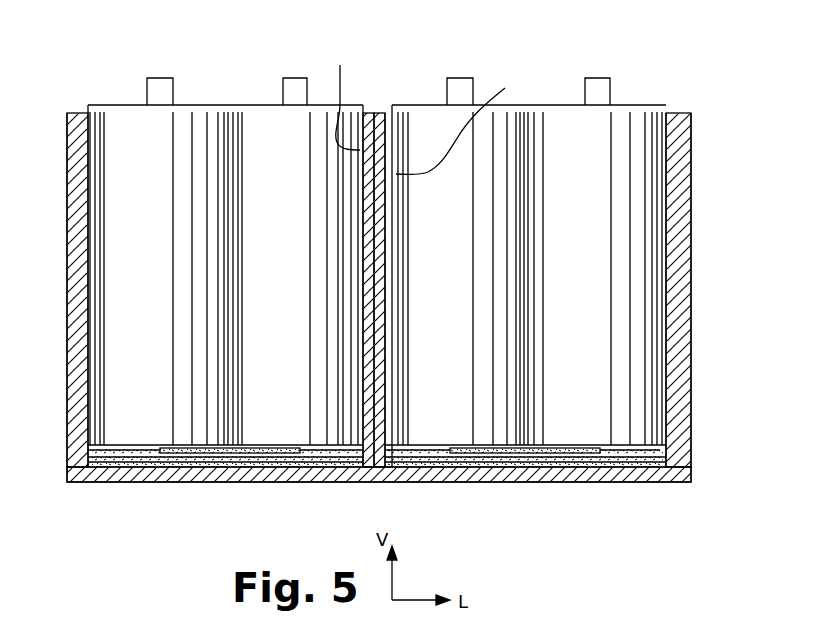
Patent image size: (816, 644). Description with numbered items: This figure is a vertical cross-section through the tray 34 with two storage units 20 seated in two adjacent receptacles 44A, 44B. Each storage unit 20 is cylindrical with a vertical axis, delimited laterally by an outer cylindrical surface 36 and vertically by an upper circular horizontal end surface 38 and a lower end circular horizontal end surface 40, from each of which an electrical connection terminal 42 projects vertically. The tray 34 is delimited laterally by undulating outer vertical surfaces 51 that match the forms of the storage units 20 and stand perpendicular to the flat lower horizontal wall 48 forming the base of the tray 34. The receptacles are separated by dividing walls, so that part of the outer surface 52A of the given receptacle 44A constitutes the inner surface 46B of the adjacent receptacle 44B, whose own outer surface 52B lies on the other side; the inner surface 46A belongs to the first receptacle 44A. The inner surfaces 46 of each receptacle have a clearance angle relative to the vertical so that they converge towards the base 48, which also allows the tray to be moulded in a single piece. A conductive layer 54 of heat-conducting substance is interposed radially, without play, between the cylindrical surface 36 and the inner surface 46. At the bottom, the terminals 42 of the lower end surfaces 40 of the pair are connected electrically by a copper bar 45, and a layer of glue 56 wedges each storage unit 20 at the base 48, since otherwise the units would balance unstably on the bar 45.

The tray 34 is at (708, 398).
The undulating outer vertical surface 51 is at (67, 315).
The inner surface 46 is at (88, 110).
The outer cylindrical surface 36 is at (690, 240).
The conductive layer 54 is at (666, 113).
The lower end circular horizontal end surface 40 is at (102, 482).
The electrical connection terminal 42 is at (300, 482).
The flat lower horizontal wall 48 is at (328, 482).
The bar 45 is at (520, 484).
The layer of glue 56 is at (652, 482).
The storage unit 20 is at (176, 482).
The inner surface of receptacle 46A is at (370, 113).
The inner surface of adjacent receptacle 46B is at (396, 141).
The upper circular horizontal end surface 38 is at (130, 105).
The outer surface of adjacent receptacle 52B is at (340, 95).
The outer surface of receptacle 52A is at (471, 120).
The receptacle 44A is at (207, 278).
The adjacent receptacle 44B is at (530, 278).